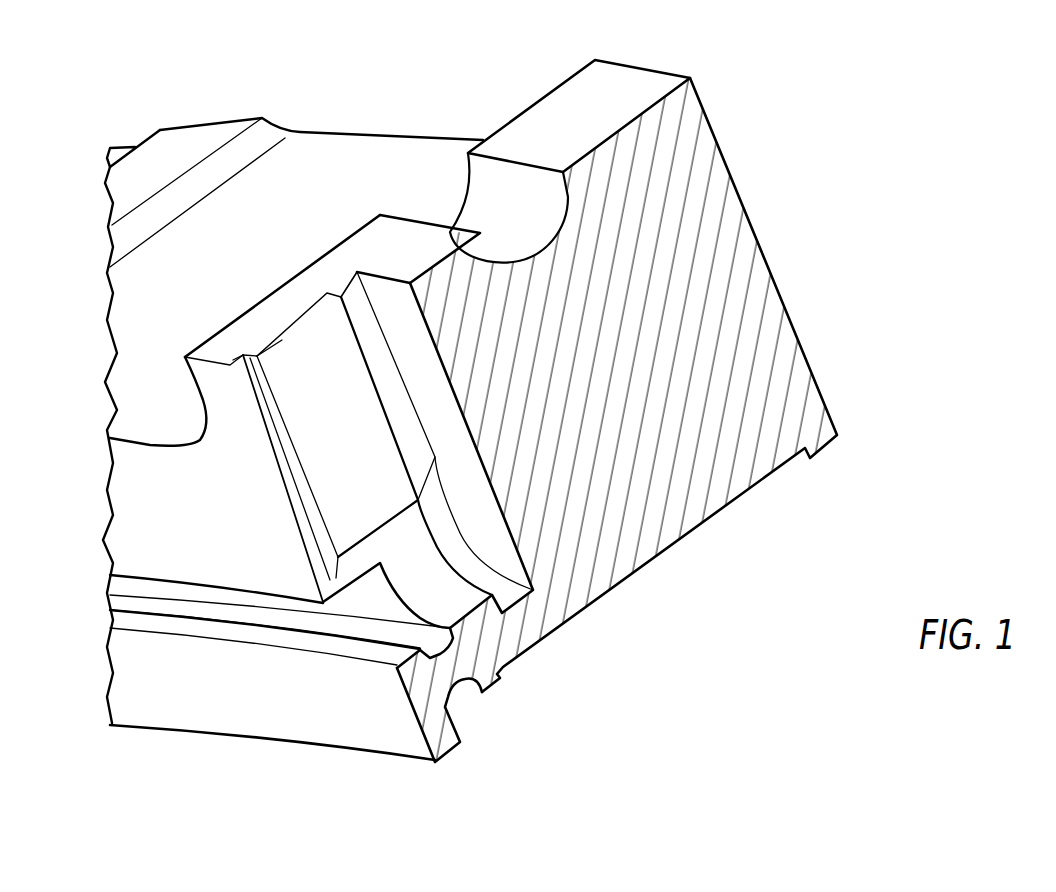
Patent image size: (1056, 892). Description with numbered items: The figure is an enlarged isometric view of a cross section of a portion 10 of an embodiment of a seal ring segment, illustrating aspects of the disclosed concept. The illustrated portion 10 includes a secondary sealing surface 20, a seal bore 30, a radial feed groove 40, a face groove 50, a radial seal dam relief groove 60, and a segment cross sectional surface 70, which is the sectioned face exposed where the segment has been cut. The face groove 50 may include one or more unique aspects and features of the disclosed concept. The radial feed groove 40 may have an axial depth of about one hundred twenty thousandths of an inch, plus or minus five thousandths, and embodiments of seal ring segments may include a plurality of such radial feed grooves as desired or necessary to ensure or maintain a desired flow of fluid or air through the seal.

The portion of a seal ring segment 10 is at (893, 88).
The secondary sealing surface 20 is at (185, 677).
The seal bore 30 is at (623, 585).
The radial feed groove 40 is at (253, 398).
The face groove 50 is at (357, 607).
The radial seal dam relief groove 60 is at (467, 700).
The segment cross sectional surface 70 is at (632, 381).